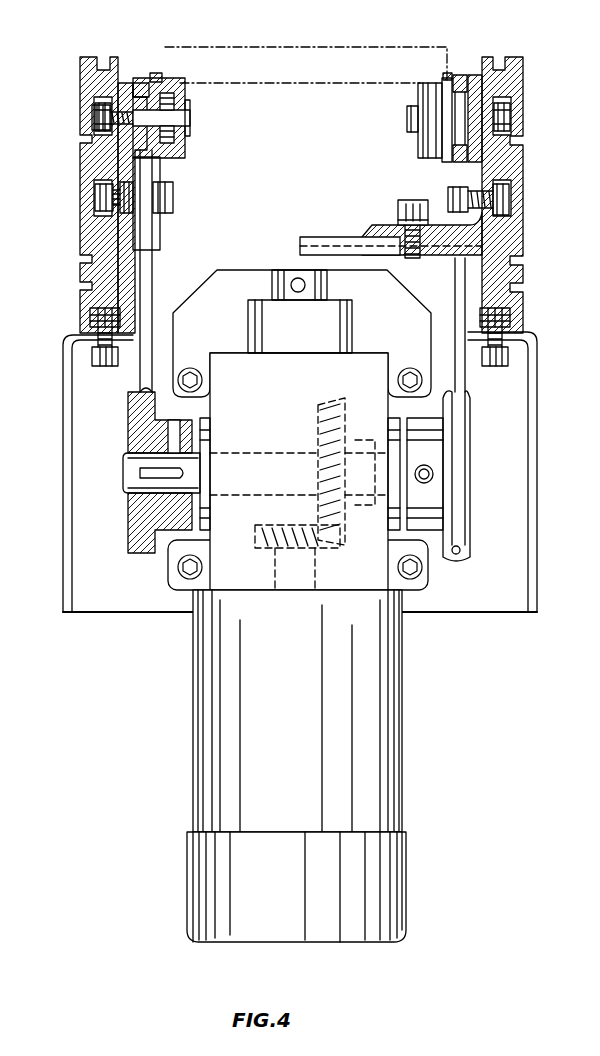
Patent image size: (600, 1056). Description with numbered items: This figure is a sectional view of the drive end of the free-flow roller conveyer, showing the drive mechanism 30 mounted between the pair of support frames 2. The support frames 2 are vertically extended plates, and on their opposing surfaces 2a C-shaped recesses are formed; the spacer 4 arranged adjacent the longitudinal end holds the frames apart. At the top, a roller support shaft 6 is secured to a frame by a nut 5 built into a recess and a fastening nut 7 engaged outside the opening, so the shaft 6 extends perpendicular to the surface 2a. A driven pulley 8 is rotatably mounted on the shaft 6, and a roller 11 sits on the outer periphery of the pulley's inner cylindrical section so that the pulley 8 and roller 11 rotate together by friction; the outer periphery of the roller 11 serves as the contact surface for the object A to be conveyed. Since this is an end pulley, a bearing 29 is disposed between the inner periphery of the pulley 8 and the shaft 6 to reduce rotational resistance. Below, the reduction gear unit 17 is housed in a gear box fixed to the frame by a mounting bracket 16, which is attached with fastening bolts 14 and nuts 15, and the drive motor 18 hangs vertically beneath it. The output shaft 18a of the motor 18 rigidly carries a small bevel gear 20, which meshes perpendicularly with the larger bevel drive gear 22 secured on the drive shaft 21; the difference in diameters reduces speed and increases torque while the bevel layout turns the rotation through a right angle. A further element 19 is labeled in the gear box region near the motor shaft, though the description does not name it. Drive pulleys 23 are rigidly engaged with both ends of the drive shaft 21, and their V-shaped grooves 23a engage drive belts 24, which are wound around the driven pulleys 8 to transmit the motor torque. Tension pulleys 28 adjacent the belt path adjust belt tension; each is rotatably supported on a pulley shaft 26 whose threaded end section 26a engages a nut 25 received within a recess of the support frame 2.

The object to be conveyed A is at (318, 46).
The support frame 2 is at (80, 250).
The opposing surface 2a is at (482, 264).
The spacer 4 is at (320, 240).
The nut 5 is at (112, 128).
The roller support shaft 6 is at (193, 118).
The fastening nut 7 is at (110, 150).
The driven pulley 8 is at (157, 70).
The roller 11 is at (175, 85).
The fastening bolt 14 is at (92, 357).
The nut 15 is at (90, 320).
The mounting bracket 16 is at (537, 456).
The reduction gear unit 17 is at (215, 575).
The drive motor 18 is at (388, 760).
The output shaft 18a is at (292, 596).
The bevel gear 19 is at (312, 560).
The bevel gear 20 is at (338, 548).
The drive shaft 21 is at (250, 452).
The drive gear 22 is at (330, 404).
The drive pulley 23 is at (130, 535).
The V-shaped groove 23a is at (140, 383).
The drive belt 24 is at (148, 272).
The nut 25 is at (118, 196).
The pulley shaft 26 is at (123, 217).
The threaded end section 26a is at (113, 200).
The tension pulley 28 is at (157, 236).
The bearing 29 is at (140, 95).
The drive mechanism 30 is at (257, 258).